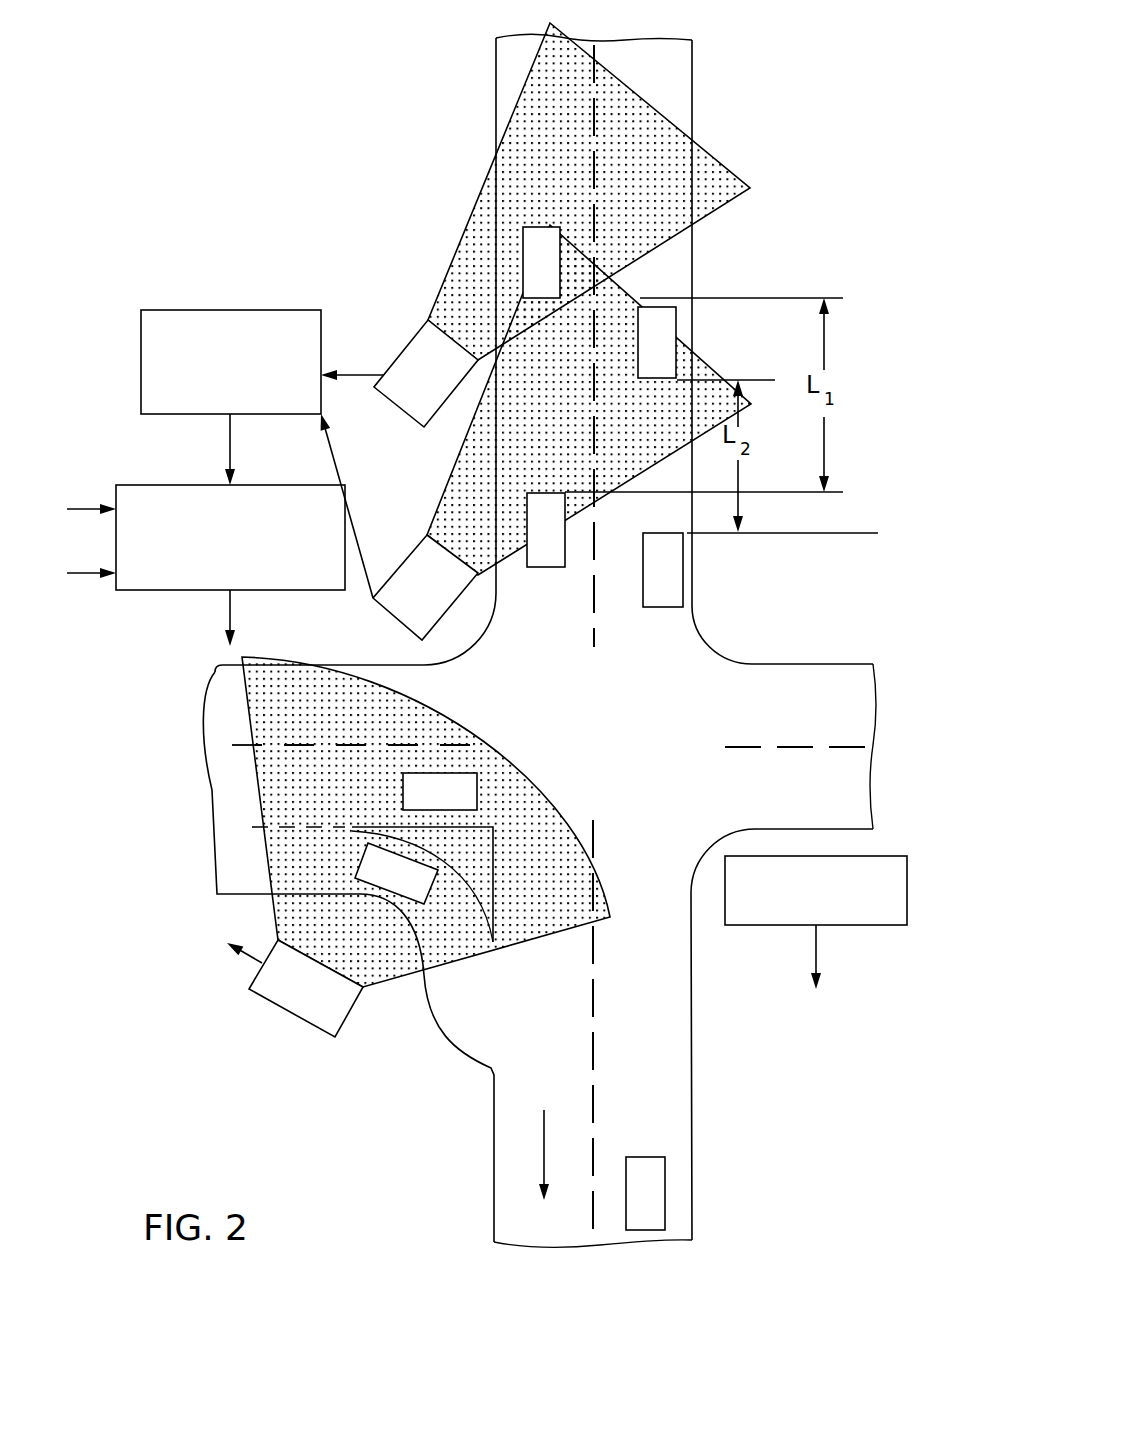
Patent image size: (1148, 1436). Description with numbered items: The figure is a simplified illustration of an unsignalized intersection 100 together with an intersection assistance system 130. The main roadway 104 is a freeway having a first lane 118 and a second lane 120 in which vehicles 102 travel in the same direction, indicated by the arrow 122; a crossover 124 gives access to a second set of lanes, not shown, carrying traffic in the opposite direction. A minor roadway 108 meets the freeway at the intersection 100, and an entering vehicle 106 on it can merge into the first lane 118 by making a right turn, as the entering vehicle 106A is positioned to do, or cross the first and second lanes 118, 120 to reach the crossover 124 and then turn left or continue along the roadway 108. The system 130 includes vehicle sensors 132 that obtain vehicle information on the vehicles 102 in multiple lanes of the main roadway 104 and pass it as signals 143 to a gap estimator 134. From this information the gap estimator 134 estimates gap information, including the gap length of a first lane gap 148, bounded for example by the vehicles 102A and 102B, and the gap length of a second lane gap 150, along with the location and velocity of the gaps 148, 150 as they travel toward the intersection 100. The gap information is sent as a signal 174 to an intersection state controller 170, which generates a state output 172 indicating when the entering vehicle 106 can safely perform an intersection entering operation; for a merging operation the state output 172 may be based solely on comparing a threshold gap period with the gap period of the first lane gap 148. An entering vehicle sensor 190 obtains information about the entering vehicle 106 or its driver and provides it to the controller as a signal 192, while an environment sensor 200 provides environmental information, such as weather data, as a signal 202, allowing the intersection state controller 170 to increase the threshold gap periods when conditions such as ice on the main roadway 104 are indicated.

The unsignalized intersection 100 is at (805, 588).
The vehicles 102 is at (673, 310).
The vehicle 102A is at (523, 230).
The vehicle 102B is at (553, 567).
The main roadway 104 is at (680, 1050).
The entering vehicle 106 is at (458, 784).
The entering vehicle 106A is at (368, 870).
The minor roadway 108 is at (215, 737).
The first lane 118 is at (497, 50).
The second lane 120 is at (687, 53).
The arrow 122 is at (544, 1146).
The crossover 124 is at (873, 827).
The intersection assistance system 130 is at (230, 411).
The vehicle sensor 132 is at (428, 318).
The gap estimator 134 is at (220, 310).
The signals 143 is at (349, 375).
The first lane gap 148 is at (540, 408).
The second lane gap 150 is at (635, 423).
The intersection state controller 170 is at (265, 485).
The state output 172 is at (232, 614).
The signal 174 is at (230, 438).
The entering vehicle sensor 190 is at (292, 1013).
The signal 192 is at (82, 573).
The environment sensor 200 is at (794, 856).
The signal 202 is at (818, 953).